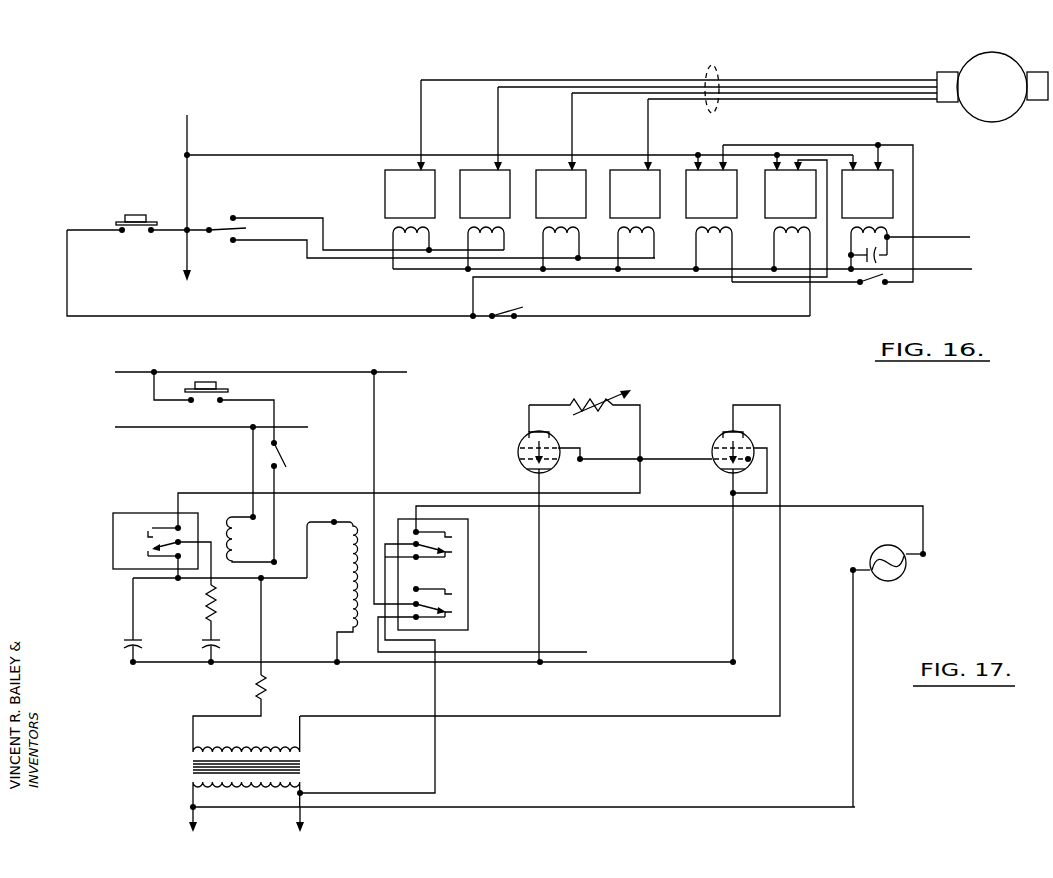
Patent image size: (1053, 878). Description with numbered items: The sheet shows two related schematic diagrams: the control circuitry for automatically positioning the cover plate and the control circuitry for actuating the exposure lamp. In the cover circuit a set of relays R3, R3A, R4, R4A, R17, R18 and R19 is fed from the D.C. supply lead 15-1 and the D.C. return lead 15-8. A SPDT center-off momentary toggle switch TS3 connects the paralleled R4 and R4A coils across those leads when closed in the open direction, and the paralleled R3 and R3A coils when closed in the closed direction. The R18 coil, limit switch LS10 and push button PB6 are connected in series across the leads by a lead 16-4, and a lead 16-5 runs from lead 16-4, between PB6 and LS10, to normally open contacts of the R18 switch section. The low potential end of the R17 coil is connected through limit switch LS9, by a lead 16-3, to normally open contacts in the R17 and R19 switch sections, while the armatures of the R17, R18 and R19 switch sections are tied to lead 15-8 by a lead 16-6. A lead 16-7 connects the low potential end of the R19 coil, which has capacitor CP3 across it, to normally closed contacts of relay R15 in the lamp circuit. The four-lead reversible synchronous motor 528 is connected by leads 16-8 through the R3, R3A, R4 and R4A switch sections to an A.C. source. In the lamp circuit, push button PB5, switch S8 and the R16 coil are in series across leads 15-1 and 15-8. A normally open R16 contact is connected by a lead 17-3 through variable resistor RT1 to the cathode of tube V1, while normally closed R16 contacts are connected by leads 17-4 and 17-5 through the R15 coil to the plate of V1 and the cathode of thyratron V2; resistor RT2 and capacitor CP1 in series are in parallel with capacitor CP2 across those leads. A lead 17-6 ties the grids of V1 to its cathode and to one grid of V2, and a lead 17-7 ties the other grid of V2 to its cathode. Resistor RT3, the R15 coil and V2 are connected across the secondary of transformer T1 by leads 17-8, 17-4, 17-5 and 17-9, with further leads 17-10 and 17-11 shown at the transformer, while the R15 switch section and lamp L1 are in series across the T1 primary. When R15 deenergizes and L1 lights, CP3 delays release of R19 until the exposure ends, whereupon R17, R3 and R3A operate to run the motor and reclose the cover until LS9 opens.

In FIG. 16, the D.C. return lead 15-8 is at (186, 141).
In FIG. 17, the D.C. return lead 15-8 is at (303, 372).
In FIG. 16, the D.C. supply lead 15-1 is at (937, 270).
In FIG. 17, the D.C. supply lead 15-1 is at (150, 428).
In FIG. 16, the lead 16-6 is at (311, 155).
In FIG. 16, the lead 16-4 is at (166, 316).
In FIG. 16, the lead 16-5 is at (603, 277).
In FIG. 16, the lead 16-3 is at (914, 193).
In FIG. 16, the lead 16-7 is at (944, 237).
In FIG. 17, the lead 16-7 is at (470, 652).
In FIG. 16, the motor leads 16-8 is at (712, 70).
In FIG. 16, the motor 528 is at (992, 87).
In FIG. 16, the push button momentary contact switch PB6 is at (138, 211).
In FIG. 16, the momentary contact toggle switch TS3 is at (244, 224).
In FIG. 16, the limit switch LS10 is at (511, 324).
In FIG. 16, the limit switch LS9 is at (870, 291).
In FIG. 16, the capacitor CP3 is at (882, 263).
In FIG. 16, the relay R3 is at (410, 174).
In FIG. 16, the relay R3A is at (485, 178).
In FIG. 16, the relay R4 is at (561, 181).
In FIG. 16, the relay R4A is at (635, 184).
In FIG. 16, the relay R17 is at (711, 213).
In FIG. 16, the relay R18 is at (790, 235).
In FIG. 16, the relay R19 is at (867, 205).
In FIG. 17, the push button switch PB5 is at (211, 387).
In FIG. 17, the switch S8 is at (270, 481).
In FIG. 17, the relay R16 is at (252, 539).
In FIG. 17, the relay R15 is at (332, 592).
In FIG. 17, the lead 17-3 is at (399, 493).
In FIG. 17, the lead 17-4 is at (270, 580).
In FIG. 17, the lead 17-5 is at (460, 662).
In FIG. 17, the lead 17-6 is at (666, 460).
In FIG. 17, the lead 17-7 is at (769, 471).
In FIG. 17, the lead 17-8 is at (262, 623).
In FIG. 17, the lead 17-9 is at (628, 716).
In FIG. 17, the transformer secondary line 17-10 is at (436, 736).
In FIG. 17, the lamp return line 17-11 is at (628, 807).
In FIG. 17, the variable resistor RT1 is at (584, 417).
In FIG. 17, the fixed resistor RT2 is at (192, 612).
In FIG. 17, the fixed resistor RT3 is at (229, 711).
In FIG. 17, the capacitor CP1 is at (226, 646).
In FIG. 17, the capacitor CP2 is at (111, 620).
In FIG. 17, the transformer T1 is at (246, 774).
In FIG. 17, the tube V1 is at (524, 439).
In FIG. 17, the thyratron V2 is at (725, 442).
In FIG. 17, the lamp L1 is at (888, 574).